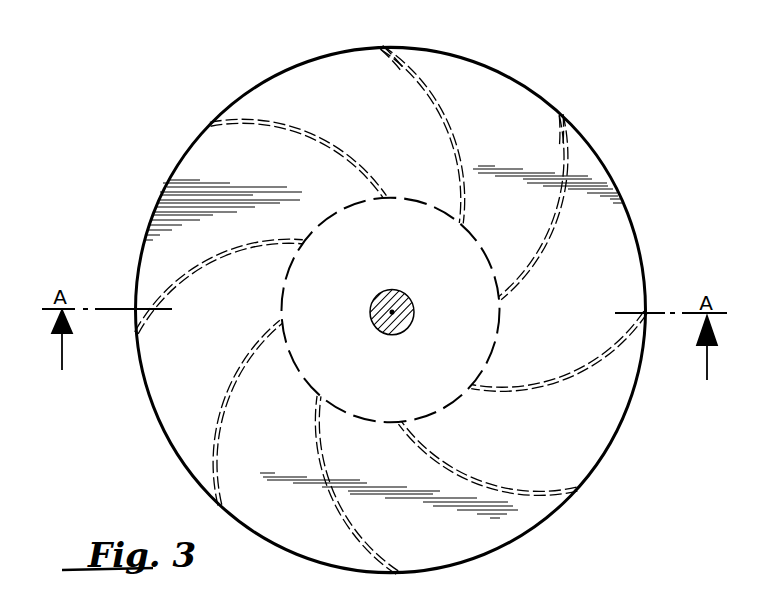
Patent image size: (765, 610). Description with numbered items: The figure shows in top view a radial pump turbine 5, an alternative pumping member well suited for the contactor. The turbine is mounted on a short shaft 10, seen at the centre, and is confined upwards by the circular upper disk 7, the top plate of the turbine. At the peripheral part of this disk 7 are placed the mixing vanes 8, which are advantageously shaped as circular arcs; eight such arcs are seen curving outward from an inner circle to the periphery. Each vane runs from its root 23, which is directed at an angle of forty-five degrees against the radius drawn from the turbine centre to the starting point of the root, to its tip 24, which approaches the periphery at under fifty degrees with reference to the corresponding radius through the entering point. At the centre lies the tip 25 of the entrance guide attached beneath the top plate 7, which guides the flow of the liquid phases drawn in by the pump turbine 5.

The pump turbine 5 is at (145, 219).
The upper disk 7 is at (400, 342).
The vanes 8 is at (387, 309).
The short shaft 10 is at (407, 303).
The root of the vanes 23 is at (426, 310).
The tips of the vanes 24 is at (508, 76).
The tip of the guide 25 is at (374, 346).